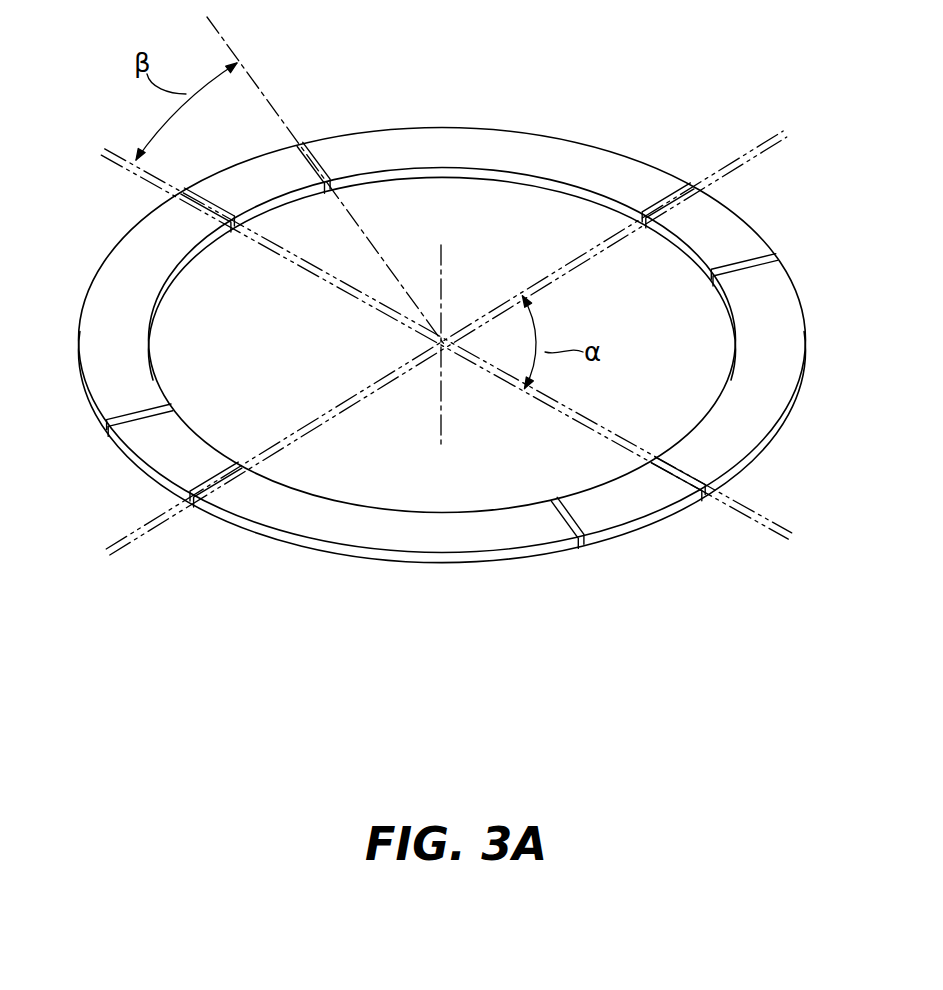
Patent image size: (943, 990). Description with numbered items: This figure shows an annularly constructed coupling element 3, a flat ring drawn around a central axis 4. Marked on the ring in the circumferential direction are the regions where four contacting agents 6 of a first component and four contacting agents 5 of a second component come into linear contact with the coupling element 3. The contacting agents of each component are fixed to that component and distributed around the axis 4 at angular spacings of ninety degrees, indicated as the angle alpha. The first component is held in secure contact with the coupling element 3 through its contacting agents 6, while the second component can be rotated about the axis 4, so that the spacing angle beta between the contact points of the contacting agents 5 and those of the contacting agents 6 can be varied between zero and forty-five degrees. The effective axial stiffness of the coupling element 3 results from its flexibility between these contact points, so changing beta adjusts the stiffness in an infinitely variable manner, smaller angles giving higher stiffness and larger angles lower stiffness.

The annularly constructed coupling element 3 is at (571, 158).
The axis 4 is at (432, 440).
The contacting agents 5 is at (322, 172).
The contacting agents 6 is at (190, 208).